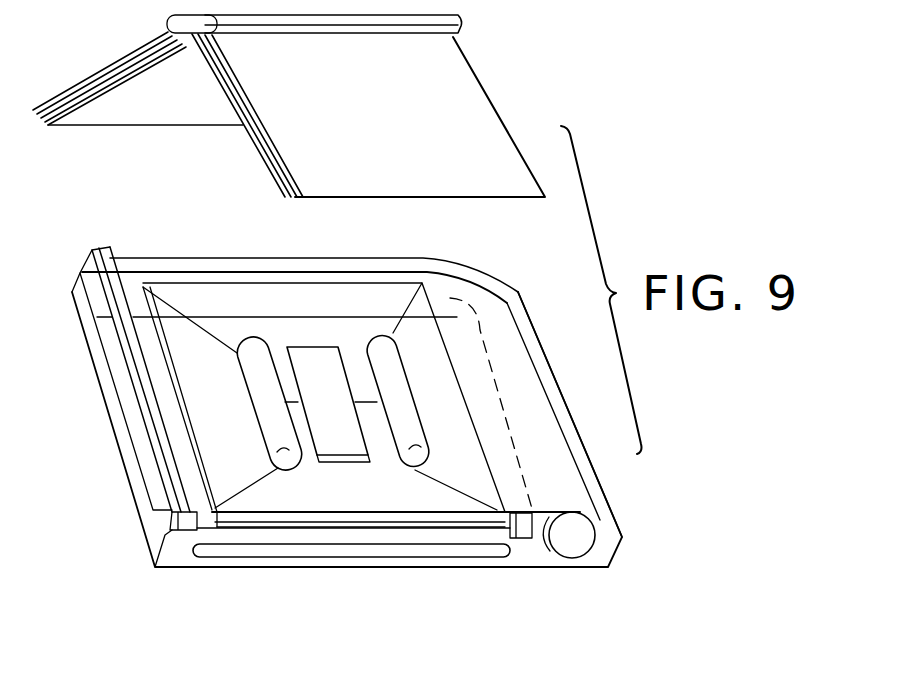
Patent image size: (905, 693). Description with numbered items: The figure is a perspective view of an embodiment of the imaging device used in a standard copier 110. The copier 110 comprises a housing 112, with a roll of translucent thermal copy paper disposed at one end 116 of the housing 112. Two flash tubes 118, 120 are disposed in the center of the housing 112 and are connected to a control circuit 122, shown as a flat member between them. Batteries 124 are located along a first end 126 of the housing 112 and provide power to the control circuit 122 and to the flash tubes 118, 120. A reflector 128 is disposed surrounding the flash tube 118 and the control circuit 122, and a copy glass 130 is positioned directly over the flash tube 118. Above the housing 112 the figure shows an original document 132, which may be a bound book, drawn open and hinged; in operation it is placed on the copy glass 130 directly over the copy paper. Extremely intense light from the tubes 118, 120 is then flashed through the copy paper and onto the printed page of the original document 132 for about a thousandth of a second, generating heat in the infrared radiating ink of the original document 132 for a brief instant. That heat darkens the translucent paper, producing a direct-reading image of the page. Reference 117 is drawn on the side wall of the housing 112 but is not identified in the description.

The standard copier 110 is at (630, 488).
The housing 112 is at (527, 308).
The one end of the housing 116 is at (585, 440).
The right side wall inner surface 117 is at (530, 392).
The flash tube 118 is at (250, 347).
The flash tube 120 is at (380, 343).
The control circuit 122 is at (328, 445).
The batteries 124 is at (440, 552).
The first end 126 is at (530, 563).
The reflector 128 is at (200, 404).
The copy glass 130 is at (190, 298).
The original document 132 is at (462, 87).